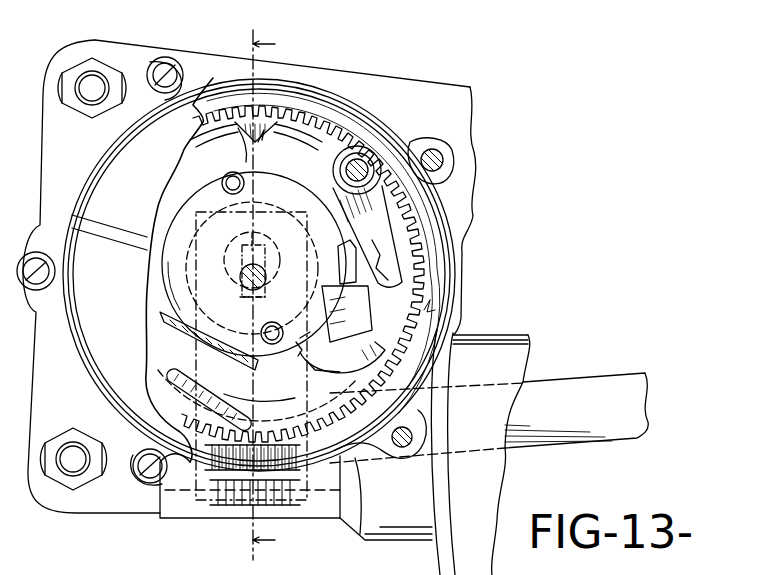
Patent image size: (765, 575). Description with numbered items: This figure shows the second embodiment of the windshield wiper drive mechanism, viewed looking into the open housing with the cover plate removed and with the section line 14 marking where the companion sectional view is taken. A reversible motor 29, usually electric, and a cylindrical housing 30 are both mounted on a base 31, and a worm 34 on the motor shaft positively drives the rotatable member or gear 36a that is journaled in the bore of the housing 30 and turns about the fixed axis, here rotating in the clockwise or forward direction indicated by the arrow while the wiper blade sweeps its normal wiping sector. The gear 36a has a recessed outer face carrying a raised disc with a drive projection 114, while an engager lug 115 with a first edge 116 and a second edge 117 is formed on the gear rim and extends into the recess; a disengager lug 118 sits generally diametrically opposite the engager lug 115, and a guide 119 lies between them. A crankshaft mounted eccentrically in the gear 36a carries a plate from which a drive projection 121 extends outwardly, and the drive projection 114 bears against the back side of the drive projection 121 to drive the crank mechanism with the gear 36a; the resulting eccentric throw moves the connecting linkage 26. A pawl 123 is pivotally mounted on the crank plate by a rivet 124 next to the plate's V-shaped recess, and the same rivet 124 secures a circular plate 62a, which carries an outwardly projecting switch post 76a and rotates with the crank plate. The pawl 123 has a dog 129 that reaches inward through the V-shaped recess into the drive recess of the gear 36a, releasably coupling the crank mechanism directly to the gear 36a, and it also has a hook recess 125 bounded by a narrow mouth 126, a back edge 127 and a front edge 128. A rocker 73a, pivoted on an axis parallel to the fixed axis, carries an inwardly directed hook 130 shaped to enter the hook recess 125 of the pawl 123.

The section line 14- 14 is at (290, 40).
The connecting linkage 26 is at (583, 378).
The reversible motor 29 is at (478, 504).
The cylindrical housing 30 is at (355, 110).
The base 31 is at (428, 82).
The worm 34 is at (215, 510).
The rotatable member or gear 36a is at (290, 112).
The circular plate 62a is at (272, 176).
The rocker 73a is at (363, 163).
The switch post 76a is at (248, 289).
The drive projection 114 is at (344, 244).
The engager lug 115 is at (200, 126).
The first edge 116 is at (240, 136).
The second edge 117 is at (263, 132).
The disengager lug 118 is at (165, 378).
The guide 119 is at (370, 348).
The drive projection 121 is at (356, 309).
The pawl 123 is at (215, 356).
The rivet 124 is at (264, 331).
The hook recess 125 is at (348, 374).
The narrow mouth 126 is at (338, 358).
The back edge 127 is at (278, 390).
The front edge 128 is at (312, 350).
The dog 129 is at (270, 285).
The hook 130 is at (400, 290).